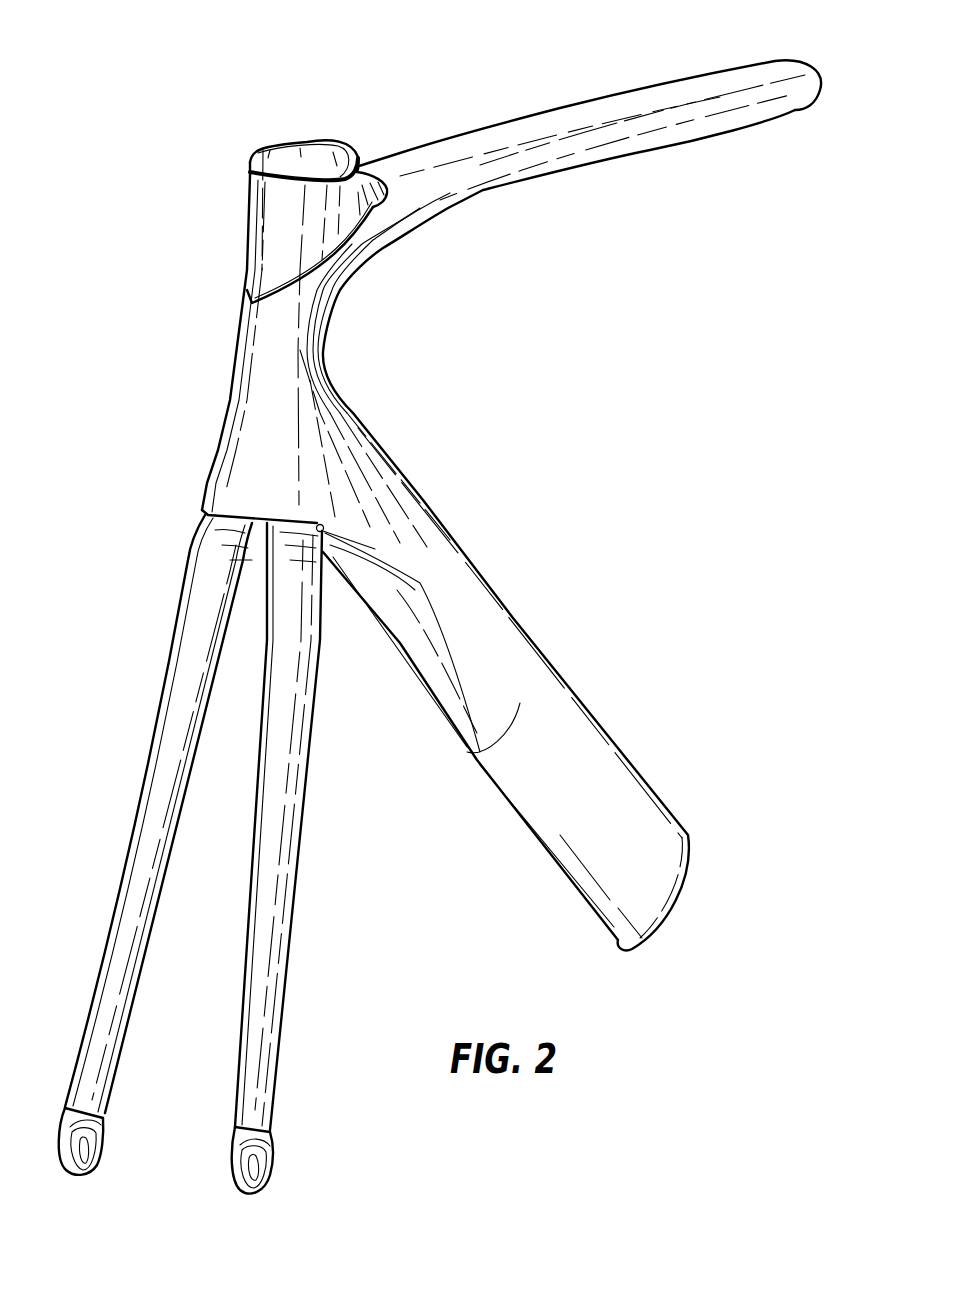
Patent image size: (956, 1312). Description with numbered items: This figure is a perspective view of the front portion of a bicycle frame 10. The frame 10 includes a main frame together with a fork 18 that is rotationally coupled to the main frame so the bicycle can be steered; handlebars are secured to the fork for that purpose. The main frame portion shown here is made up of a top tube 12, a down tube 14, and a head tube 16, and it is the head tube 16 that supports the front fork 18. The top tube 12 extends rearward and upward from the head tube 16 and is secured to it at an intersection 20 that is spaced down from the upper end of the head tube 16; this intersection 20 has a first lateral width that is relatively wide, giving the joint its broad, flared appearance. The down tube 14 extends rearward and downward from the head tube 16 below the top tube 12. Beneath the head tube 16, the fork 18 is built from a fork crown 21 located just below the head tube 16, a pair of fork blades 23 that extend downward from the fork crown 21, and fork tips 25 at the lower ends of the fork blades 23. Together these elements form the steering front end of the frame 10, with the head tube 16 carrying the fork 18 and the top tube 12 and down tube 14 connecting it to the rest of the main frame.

The frame 10 is at (442, 84).
The top tube 12 is at (605, 118).
The down tube 14 is at (563, 725).
The head tube 16 is at (247, 378).
The fork 18 is at (129, 655).
The intersection 20 is at (323, 246).
The fork crown 21 is at (222, 530).
The fork blades 23 is at (273, 843).
The fork tips 25 is at (273, 1162).